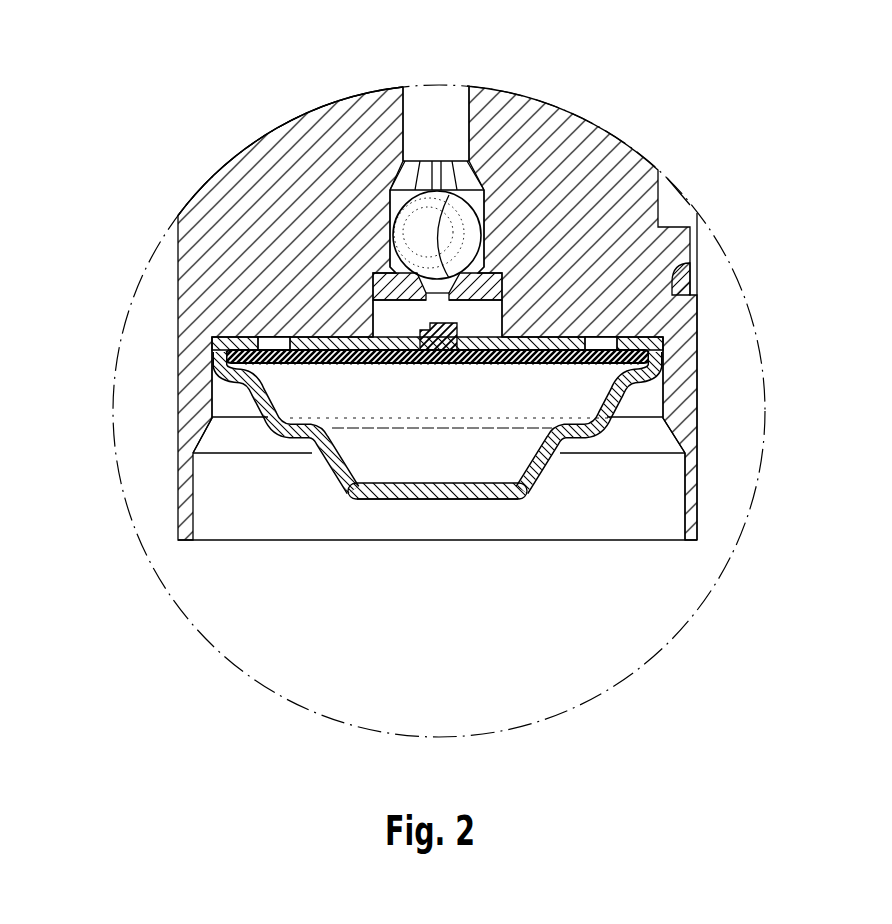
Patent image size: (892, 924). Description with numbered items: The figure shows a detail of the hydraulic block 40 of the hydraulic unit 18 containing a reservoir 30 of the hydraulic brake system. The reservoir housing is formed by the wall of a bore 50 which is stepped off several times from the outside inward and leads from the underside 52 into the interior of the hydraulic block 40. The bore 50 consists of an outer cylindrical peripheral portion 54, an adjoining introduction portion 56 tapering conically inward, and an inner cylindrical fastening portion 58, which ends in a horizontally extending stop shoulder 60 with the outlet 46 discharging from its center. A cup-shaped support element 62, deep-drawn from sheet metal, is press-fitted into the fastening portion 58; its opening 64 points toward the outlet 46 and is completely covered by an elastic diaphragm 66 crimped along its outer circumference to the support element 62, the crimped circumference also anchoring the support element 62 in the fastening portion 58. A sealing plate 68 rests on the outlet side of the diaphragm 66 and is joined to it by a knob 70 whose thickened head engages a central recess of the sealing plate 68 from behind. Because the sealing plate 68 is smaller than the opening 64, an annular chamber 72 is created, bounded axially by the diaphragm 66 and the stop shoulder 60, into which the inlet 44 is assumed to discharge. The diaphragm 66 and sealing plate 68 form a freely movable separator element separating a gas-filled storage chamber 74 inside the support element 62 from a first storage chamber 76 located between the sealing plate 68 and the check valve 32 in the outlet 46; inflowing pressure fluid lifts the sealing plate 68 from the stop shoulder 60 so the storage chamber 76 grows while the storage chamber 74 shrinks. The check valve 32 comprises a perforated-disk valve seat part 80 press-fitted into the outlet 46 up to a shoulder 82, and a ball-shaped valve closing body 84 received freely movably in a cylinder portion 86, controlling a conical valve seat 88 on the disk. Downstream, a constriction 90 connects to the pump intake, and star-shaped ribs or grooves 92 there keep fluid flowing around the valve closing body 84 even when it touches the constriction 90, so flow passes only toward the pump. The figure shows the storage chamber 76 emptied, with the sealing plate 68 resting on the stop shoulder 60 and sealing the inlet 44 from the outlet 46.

The hydraulic unit 18 is at (708, 80).
The reservoir 30 is at (336, 517).
The check valve 32 is at (358, 236).
The hydraulic block 40 is at (240, 187).
The inlet 44 is at (598, 352).
The outlet 46 is at (406, 112).
The bore 50 is at (262, 515).
The underside 52 is at (374, 540).
The outer cylindrical peripheral portion 54 is at (690, 487).
The introduction portion 56 is at (663, 397).
The fastening portion 58 is at (612, 383).
The stop shoulder 60 is at (275, 345).
The support element 62 is at (455, 494).
The opening 64 is at (690, 200).
The diaphragm 66 is at (497, 363).
The sealing plate 68 is at (600, 345).
The knob 70 is at (427, 323).
The annular chamber 72 is at (282, 348).
The storage chamber 74 is at (405, 467).
The storage chamber 76 is at (348, 337).
The valve seat part 80 is at (385, 315).
The shoulder 82 is at (553, 337).
The valve closing body 84 is at (443, 207).
The cylinder portion 86 is at (392, 187).
The valve seat 88 is at (503, 290).
The constriction 90 is at (398, 184).
The ribs or grooves 92 is at (460, 161).